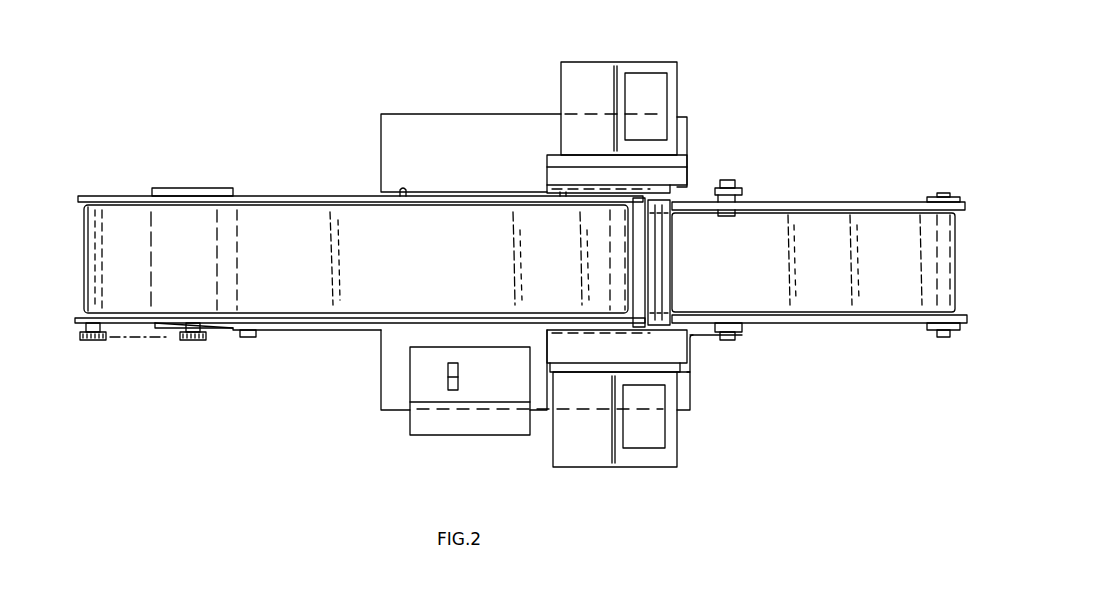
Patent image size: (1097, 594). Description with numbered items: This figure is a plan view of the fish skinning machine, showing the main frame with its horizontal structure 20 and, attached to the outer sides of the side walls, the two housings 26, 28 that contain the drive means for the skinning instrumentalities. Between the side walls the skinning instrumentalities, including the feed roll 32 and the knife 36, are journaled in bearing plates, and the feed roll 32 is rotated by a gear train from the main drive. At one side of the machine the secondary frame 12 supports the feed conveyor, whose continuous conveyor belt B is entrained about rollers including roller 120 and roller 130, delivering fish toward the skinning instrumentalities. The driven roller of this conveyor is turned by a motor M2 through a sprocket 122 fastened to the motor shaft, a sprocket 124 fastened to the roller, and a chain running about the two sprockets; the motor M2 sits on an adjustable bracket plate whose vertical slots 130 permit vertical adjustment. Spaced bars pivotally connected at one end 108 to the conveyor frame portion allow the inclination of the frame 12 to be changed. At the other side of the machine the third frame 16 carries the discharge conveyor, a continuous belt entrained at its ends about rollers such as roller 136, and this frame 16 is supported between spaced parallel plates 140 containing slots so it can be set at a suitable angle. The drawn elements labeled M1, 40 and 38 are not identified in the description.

The secondary frame 12 is at (286, 182).
The conveyor belt B is at (318, 212).
The motor M2 is at (182, 188).
The first motor M1 is at (503, 388).
The horizontal structure 20 is at (467, 113).
The housing 28 is at (678, 73).
The mounting bracket 40 is at (548, 158).
The feed roll 32 is at (638, 285).
The knife 36 is at (663, 255).
The roller 130 is at (610, 270).
The third frame 16 is at (834, 192).
The spaced parallel plates 140 is at (742, 193).
The roller 136 is at (943, 193).
The lower bracket 38 is at (677, 352).
The housing 26 is at (673, 433).
The sprocket 122 is at (93, 345).
The sprocket 124 is at (145, 337).
The roller 120 is at (197, 345).
The pivot connection 108 is at (250, 342).